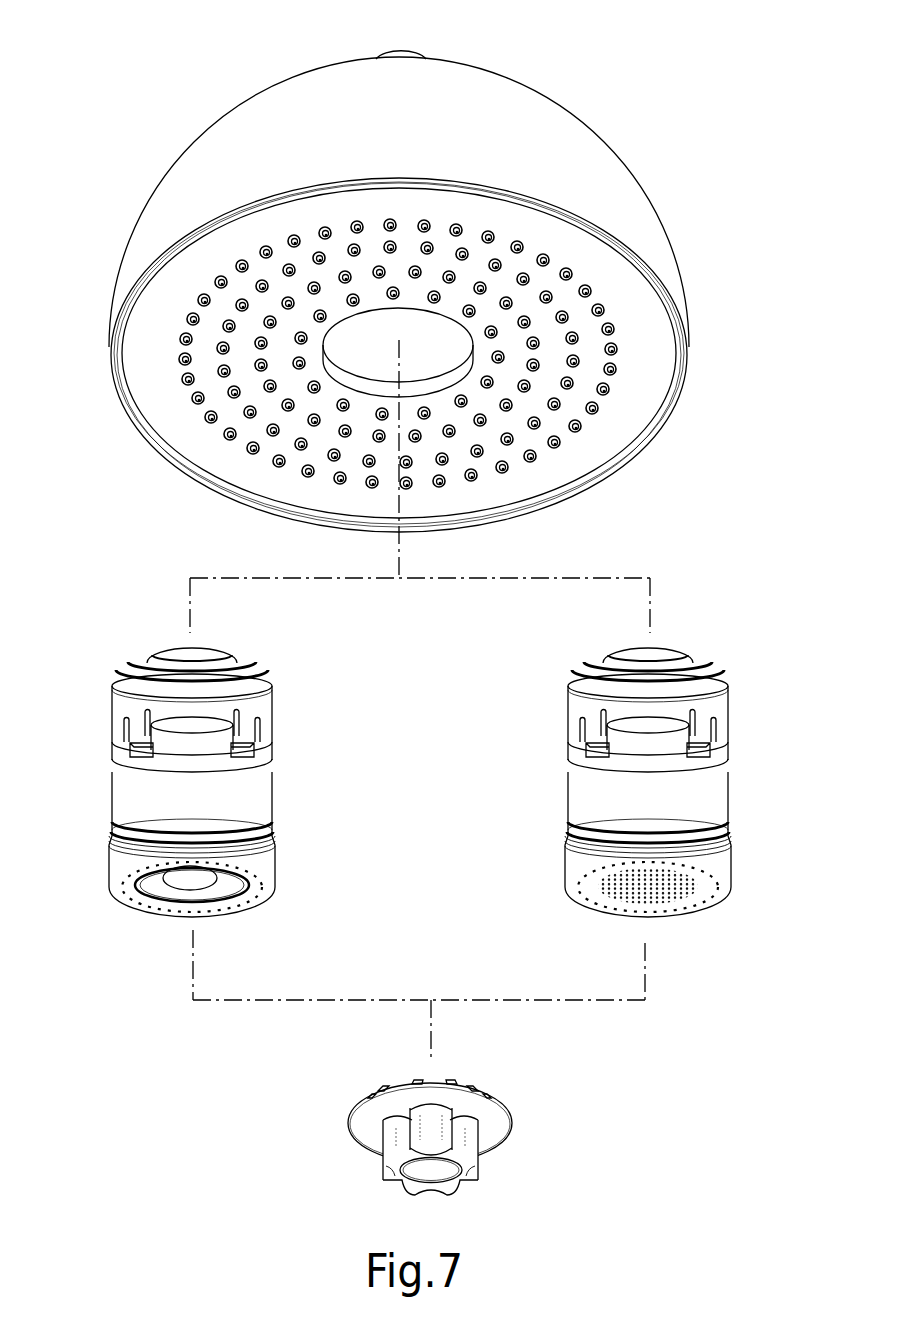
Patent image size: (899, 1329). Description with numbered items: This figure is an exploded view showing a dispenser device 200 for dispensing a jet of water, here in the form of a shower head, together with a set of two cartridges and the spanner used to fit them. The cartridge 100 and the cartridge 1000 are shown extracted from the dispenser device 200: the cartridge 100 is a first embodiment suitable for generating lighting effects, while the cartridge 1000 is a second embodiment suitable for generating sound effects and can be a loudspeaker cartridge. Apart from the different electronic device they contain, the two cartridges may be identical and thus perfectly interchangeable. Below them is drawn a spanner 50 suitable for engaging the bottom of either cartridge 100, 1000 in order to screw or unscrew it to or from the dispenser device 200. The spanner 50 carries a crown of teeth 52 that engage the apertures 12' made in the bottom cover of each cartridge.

The dispenser device 200 is at (660, 130).
The cartridge 100 is at (117, 628).
The cartridge 1000 is at (702, 632).
The apertures 12' is at (393, 955).
The spanner 50 is at (333, 1158).
The crown of teeth 52 is at (478, 1088).